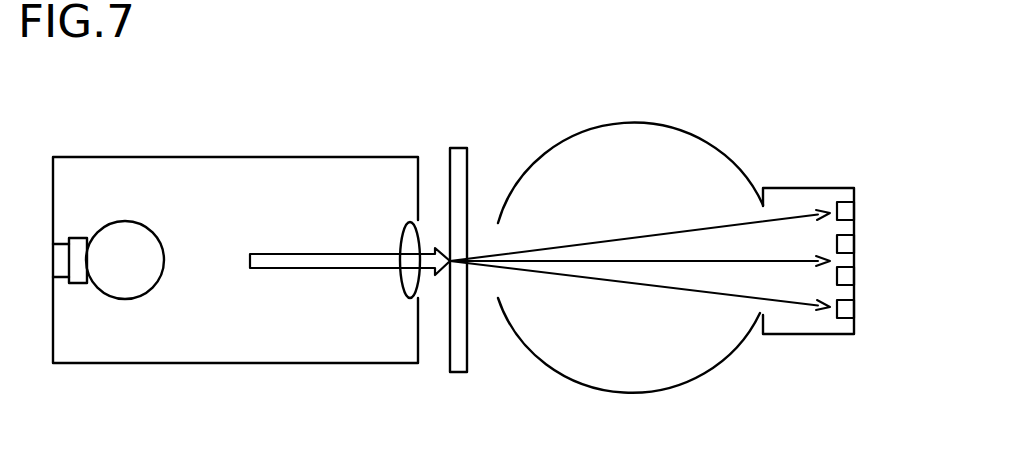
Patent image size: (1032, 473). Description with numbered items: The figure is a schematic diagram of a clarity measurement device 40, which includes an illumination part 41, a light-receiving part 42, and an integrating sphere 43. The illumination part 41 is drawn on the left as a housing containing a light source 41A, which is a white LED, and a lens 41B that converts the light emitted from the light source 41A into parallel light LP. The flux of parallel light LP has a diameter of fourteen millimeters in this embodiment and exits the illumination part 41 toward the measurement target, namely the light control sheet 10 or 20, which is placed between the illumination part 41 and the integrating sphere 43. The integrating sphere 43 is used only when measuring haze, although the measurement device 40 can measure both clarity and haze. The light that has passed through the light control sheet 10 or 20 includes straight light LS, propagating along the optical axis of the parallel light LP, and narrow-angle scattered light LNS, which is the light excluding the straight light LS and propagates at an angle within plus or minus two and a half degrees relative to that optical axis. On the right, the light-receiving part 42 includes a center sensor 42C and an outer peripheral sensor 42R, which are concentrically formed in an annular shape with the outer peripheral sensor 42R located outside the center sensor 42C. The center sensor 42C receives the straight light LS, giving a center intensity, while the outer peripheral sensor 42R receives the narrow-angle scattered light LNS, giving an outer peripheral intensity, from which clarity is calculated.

The light control sheet 10 is at (487, 236).
The light control sheet 20 is at (457, 147).
The clarity measurement device 40 is at (775, 98).
The illumination part 41 is at (236, 155).
The light source 41A is at (122, 302).
The lens 41B is at (400, 284).
The light-receiving part 42 is at (810, 187).
The outer peripheral sensor 42R is at (855, 212).
The center sensor 42C is at (855, 237).
The integrating sphere 43 is at (636, 400).
The parallel light LP is at (423, 247).
The straight light LS is at (700, 260).
The narrow-angle scattered light LNS is at (645, 237).